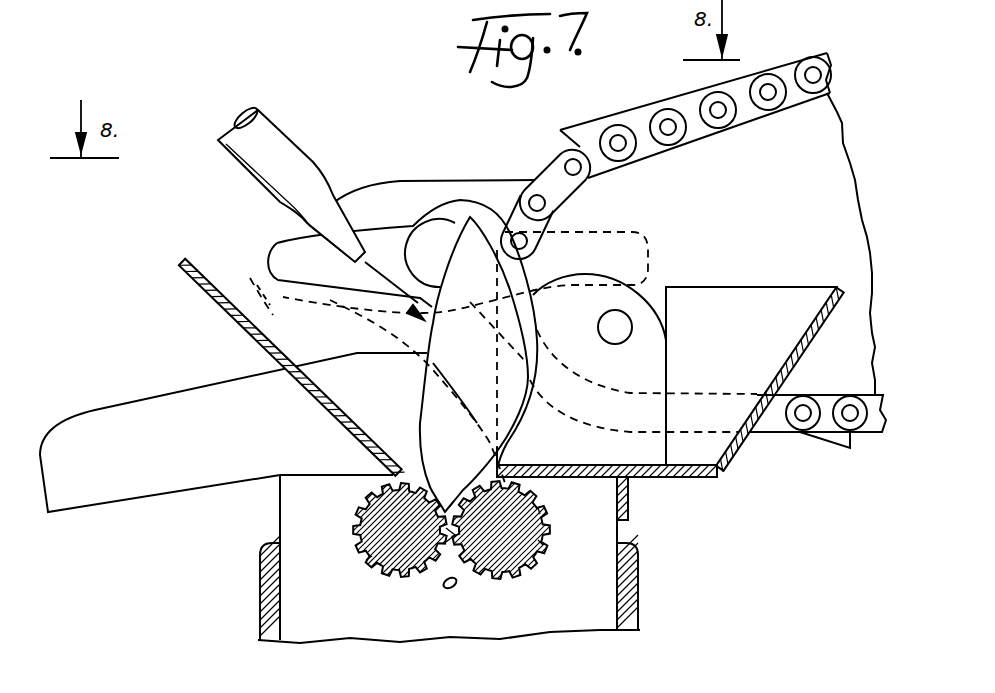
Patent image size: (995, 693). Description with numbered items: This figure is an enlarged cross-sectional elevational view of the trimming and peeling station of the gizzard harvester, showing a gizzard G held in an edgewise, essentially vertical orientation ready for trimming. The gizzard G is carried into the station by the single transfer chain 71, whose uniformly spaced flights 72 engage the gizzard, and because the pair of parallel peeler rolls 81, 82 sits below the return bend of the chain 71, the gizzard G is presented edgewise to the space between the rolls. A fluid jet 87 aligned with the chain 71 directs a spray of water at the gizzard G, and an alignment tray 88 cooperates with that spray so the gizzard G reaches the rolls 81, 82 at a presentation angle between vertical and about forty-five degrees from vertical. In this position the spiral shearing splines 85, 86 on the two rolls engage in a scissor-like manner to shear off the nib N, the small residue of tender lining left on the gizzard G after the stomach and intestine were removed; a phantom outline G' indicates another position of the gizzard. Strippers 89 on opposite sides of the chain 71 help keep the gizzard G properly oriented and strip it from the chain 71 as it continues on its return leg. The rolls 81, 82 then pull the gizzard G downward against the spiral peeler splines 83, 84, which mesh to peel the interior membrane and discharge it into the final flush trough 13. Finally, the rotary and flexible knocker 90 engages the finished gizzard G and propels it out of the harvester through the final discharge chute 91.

The final flush trough 13 is at (598, 593).
The single transfer chain 71 is at (762, 107).
The flights 72 is at (833, 440).
The peeler roll 81 is at (538, 512).
The peeler roll 82 is at (372, 518).
The spiral peeler splines 83 is at (543, 545).
The spiral peeler splines 84 is at (372, 556).
The spiral shearing spline 85 is at (450, 526).
The spiral shearing spline 86 is at (452, 537).
The fluid jet 87 is at (290, 140).
The alignment tray 88 is at (218, 302).
The strippers 89 is at (607, 302).
The rotary and flexible knocker 90 is at (278, 247).
The final discharge chute 91 is at (142, 407).
The gizzard G is at (474, 364).
The blade alternate position G' is at (253, 282).
The nib N is at (447, 588).